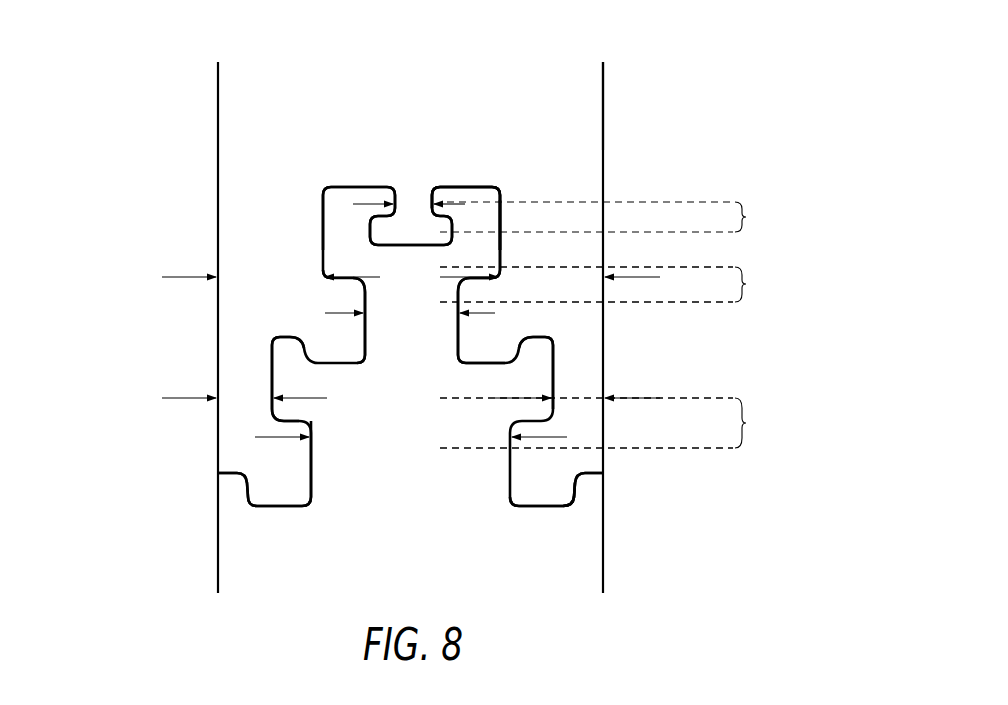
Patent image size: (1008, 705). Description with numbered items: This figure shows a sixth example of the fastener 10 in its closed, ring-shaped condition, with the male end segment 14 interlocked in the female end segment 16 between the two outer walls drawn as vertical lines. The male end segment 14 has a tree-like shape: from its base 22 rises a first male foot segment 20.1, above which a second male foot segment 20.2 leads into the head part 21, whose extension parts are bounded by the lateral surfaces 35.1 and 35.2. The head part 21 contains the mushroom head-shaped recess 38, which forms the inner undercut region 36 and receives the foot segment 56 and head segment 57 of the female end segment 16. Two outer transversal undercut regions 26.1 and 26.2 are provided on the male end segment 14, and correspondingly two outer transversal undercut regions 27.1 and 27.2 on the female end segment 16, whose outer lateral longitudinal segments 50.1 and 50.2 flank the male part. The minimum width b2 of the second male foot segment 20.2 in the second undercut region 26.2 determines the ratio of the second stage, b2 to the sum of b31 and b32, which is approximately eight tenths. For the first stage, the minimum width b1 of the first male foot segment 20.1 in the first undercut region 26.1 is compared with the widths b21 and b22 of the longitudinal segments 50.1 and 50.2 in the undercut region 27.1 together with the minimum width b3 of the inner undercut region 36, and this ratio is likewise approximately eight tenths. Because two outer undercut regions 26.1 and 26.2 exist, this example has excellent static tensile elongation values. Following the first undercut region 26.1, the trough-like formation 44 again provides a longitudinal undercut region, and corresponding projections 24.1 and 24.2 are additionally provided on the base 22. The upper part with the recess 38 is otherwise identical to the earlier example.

The fastener 10 is at (771, 61).
The male end segment 14 is at (692, 571).
The female end segment 16 is at (99, 135).
The head part 21 is at (353, 227).
The base 22 is at (283, 509).
The first male foot segment 20.1 is at (337, 473).
The second male foot segment 20.2 is at (377, 333).
The projection 24.1 is at (237, 498).
The projection 24.2 is at (587, 497).
The first outer transversal undercut region 26.1 is at (640, 423).
The second outer transversal undercut region 26.2 is at (640, 284).
The outer transversal undercut region 27.1 is at (586, 284).
The outer transversal undercut region 27.2 is at (586, 423).
The lateral surface 35.1 is at (317, 197).
The lateral surface 35.2 is at (506, 241).
The inner undercut region 36 is at (606, 218).
The mushroom head-shaped recess 38 is at (466, 218).
The trough-like formation 44 is at (498, 359).
The outer lateral longitudinal segment 50.1 is at (237, 428).
The outer lateral longitudinal segment 50.2 is at (588, 370).
The foot segment 56 is at (398, 197).
The head segment 57 is at (499, 194).
The minimum width b1 is at (483, 440).
The minimum width b2 is at (410, 315).
The minimum width b3 is at (409, 206).
The width b21 is at (550, 278).
The width b22 is at (271, 278).
The width b31 is at (577, 403).
The width b32 is at (244, 411).